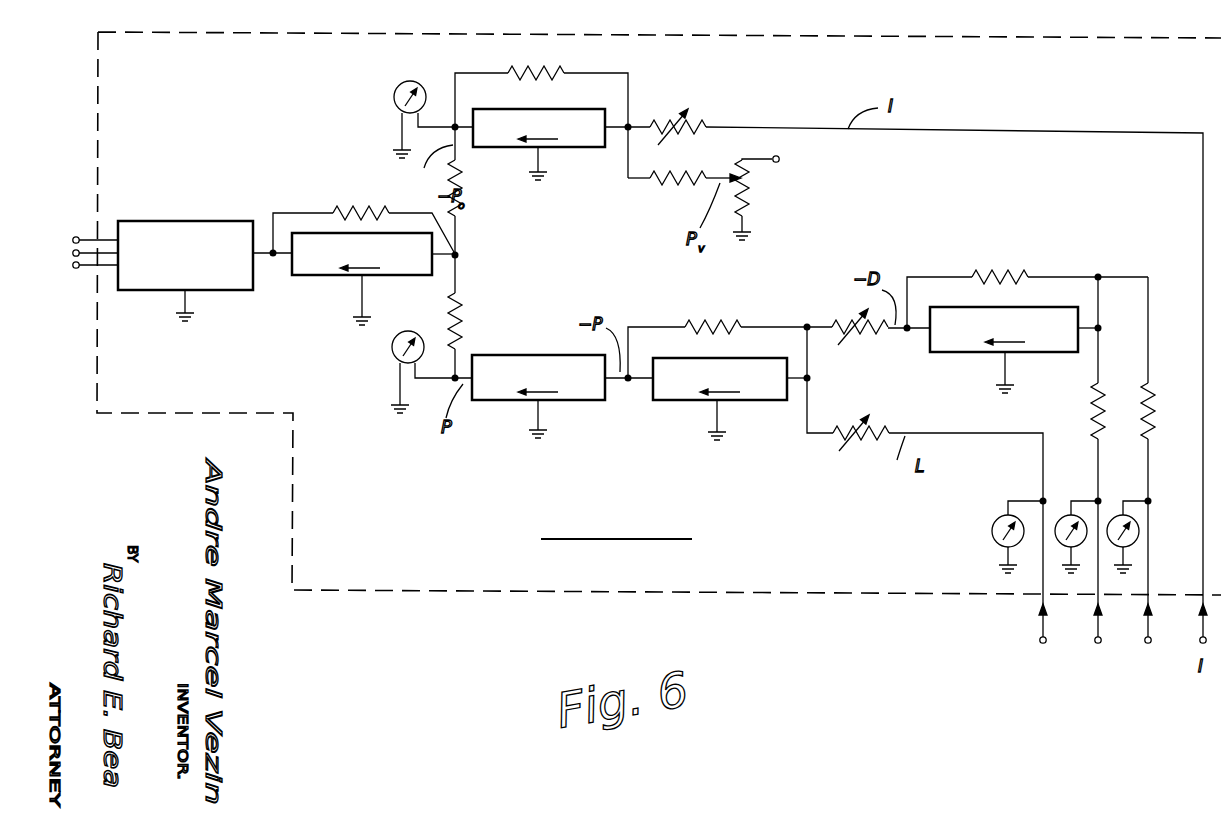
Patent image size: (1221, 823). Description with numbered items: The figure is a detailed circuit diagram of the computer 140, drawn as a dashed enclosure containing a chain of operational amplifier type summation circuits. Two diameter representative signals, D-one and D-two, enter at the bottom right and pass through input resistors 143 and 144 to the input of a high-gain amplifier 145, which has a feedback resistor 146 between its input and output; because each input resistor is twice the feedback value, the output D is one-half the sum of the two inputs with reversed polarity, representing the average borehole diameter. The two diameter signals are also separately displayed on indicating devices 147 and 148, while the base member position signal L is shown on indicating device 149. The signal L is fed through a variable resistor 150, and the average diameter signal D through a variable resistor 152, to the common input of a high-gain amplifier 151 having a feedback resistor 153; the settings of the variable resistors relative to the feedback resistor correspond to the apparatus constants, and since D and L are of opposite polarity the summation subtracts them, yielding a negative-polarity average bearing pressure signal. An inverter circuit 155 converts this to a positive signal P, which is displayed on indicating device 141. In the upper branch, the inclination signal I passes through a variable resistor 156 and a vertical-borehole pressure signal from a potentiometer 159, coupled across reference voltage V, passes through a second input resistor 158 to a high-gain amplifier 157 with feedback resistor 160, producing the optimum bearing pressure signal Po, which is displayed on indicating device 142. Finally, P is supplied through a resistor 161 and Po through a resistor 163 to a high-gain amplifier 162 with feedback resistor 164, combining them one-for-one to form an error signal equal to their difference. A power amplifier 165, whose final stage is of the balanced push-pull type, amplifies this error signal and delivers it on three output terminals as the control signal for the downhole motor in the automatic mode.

The computer 140 is at (765, 594).
The indicating device 141 is at (391, 352).
The indicating device 142 is at (392, 90).
The resistor 143 is at (1095, 410).
The resistor 144 is at (1153, 412).
The high-gain amplifier 145 is at (968, 355).
The feedback resistor 146 is at (1003, 272).
The indicating device 147 is at (1068, 515).
The indicating device 148 is at (1122, 517).
The indicating device 149 is at (995, 520).
The variable resistor 150 is at (872, 425).
The high-gain amplifier 151 is at (678, 403).
The variable resistor 152 is at (840, 320).
The feedback resistor 153 is at (713, 322).
The inverter circuit 155 is at (513, 355).
The variable resistor 156 is at (692, 122).
The high-gain amplifier 157 is at (565, 150).
The second input resistor 158 is at (668, 185).
The potentiometer 159 is at (752, 192).
The feedback resistor 160 is at (538, 70).
The resistor 161 is at (460, 305).
The high-gain amplifier 162 is at (327, 276).
The resistor 163 is at (460, 192).
The feedback resistor 164 is at (358, 210).
The power amplifier 165 is at (182, 220).